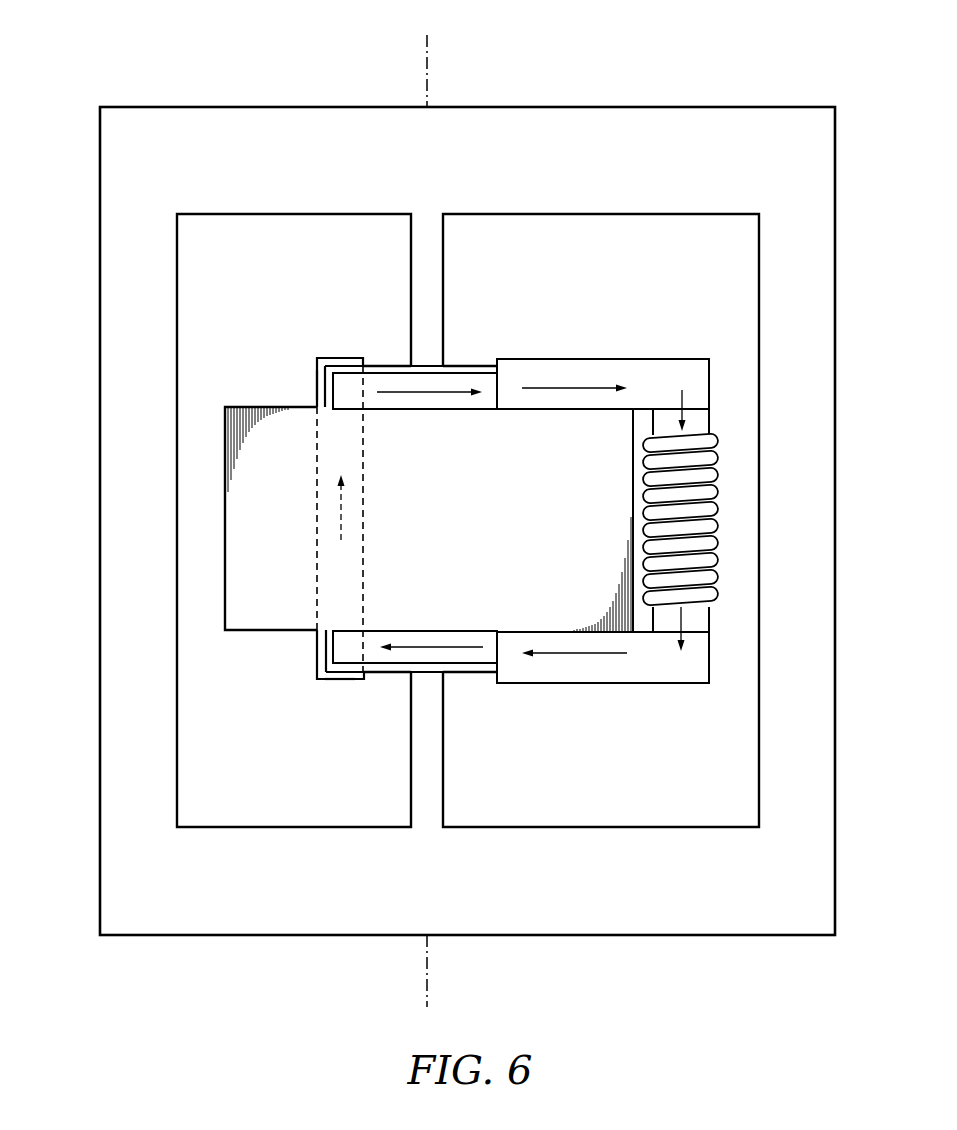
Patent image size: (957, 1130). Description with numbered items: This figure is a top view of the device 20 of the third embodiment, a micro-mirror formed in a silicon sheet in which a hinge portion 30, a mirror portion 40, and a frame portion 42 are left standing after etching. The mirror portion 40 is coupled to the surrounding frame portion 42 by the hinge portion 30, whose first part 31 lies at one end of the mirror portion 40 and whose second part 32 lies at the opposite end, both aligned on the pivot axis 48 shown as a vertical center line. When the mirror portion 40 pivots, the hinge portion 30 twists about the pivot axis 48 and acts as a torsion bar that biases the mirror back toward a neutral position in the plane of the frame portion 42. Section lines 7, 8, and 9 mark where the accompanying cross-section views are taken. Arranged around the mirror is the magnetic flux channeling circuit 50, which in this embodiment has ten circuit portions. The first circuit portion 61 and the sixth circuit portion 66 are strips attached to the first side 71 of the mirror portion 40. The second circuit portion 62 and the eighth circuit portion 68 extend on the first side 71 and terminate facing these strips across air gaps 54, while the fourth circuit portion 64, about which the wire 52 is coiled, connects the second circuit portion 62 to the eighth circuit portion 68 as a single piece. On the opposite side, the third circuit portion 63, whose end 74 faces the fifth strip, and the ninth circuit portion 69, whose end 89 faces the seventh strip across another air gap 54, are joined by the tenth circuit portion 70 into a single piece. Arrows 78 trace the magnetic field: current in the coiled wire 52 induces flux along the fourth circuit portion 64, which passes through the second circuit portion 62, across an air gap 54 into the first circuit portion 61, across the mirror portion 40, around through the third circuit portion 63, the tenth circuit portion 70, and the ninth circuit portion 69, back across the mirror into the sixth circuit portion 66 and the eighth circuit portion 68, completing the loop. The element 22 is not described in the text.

The device 20 is at (560, 64).
The right core section 22 is at (648, 303).
The hinge portion 30 is at (402, 241).
The first part of the hinge portion 31 is at (432, 800).
The second part of the hinge portion 32 is at (428, 258).
The mirror portion 40 is at (483, 531).
The frame portion 42 is at (451, 171).
The pivot axis 48 is at (425, 50).
The magnetic flux channeling circuit 50 is at (696, 351).
The wire 52 is at (712, 493).
The air gap 54 is at (369, 350).
The first circuit portion 61 is at (417, 641).
The second circuit portion 62 is at (553, 636).
The third circuit portion 63 is at (318, 660).
The fourth circuit portion 64 is at (693, 615).
The sixth circuit portion 66 is at (450, 409).
The eighth circuit portion 68 is at (548, 368).
The ninth circuit portion 69 is at (317, 388).
The tenth circuit portion 70 is at (318, 548).
The first side of the mirror portion 71 is at (243, 632).
The end of the third circuit portion 74 is at (333, 682).
The arrows 78 is at (403, 396).
The end of the ninth circuit portion 89 is at (332, 357).
The section line 7— 7 is at (62, 700).
The section line 8— 8 is at (203, 58).
The section line 9— 9 is at (729, 60).